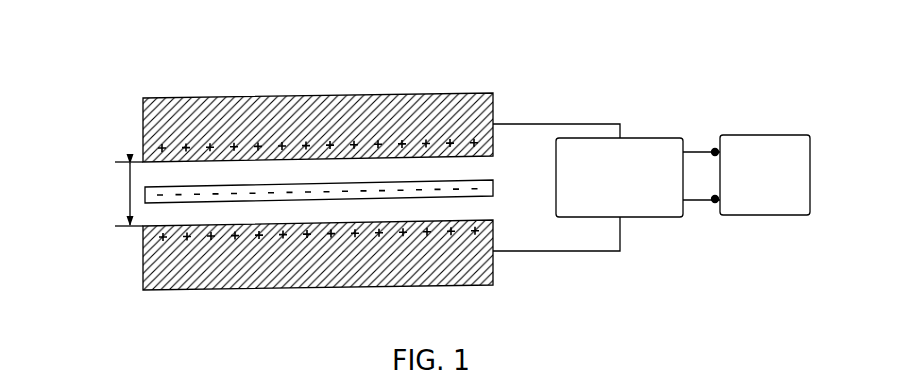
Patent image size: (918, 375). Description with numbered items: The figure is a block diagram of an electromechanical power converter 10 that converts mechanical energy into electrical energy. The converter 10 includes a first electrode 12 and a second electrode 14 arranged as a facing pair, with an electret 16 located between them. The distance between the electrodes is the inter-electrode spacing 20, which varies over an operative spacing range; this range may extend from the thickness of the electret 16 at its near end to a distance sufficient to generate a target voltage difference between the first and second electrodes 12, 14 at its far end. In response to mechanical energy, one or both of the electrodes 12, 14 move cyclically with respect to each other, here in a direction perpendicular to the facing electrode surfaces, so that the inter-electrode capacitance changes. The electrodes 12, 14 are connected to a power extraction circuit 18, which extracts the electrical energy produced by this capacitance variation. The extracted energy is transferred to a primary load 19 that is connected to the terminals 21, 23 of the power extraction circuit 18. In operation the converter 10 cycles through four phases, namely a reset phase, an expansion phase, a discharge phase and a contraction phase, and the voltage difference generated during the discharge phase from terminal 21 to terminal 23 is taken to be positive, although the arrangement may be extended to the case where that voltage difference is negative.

The electromechanical power converter 10 is at (137, 52).
The first electrode 12 is at (143, 128).
The second electrode 14 is at (145, 257).
The electret 16 is at (495, 185).
The power extraction circuit 18 is at (652, 137).
The primary load 19 is at (763, 217).
The inter-electrode spacing 20 is at (127, 195).
The terminal 21 is at (698, 150).
The terminal 23 is at (698, 202).